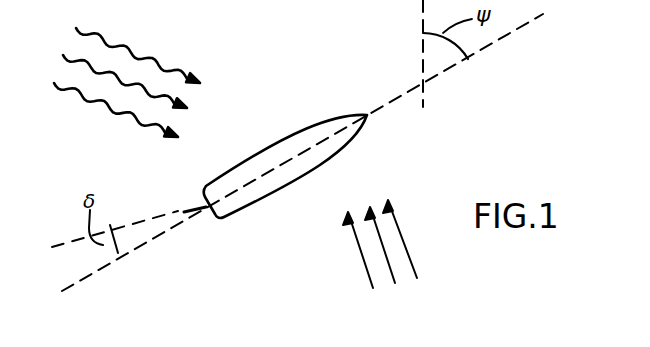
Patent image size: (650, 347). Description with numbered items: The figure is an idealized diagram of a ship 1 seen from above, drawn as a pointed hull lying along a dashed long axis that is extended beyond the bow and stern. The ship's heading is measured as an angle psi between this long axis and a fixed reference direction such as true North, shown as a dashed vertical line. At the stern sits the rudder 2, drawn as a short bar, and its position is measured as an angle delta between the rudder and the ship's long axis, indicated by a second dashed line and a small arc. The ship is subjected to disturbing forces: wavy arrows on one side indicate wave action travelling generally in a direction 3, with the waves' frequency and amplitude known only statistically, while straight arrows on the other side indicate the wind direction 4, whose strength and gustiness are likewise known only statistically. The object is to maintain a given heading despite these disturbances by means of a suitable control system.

The ship 1 is at (277, 138).
The rudder 2 is at (196, 211).
The wave direction 3 is at (113, 82).
The wind direction 4 is at (380, 255).